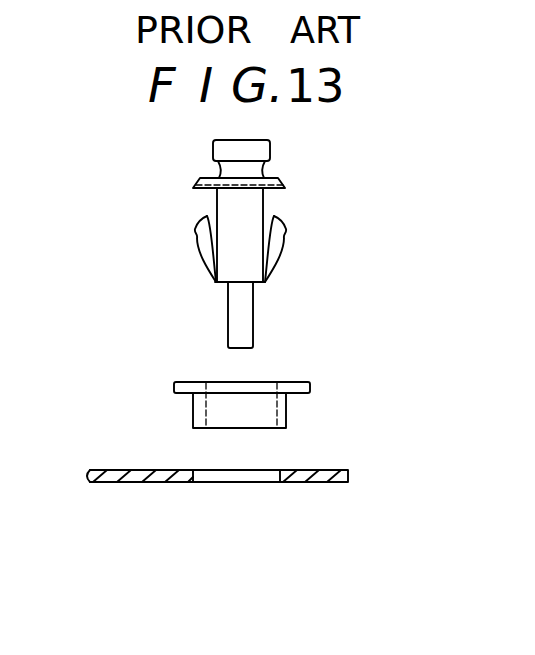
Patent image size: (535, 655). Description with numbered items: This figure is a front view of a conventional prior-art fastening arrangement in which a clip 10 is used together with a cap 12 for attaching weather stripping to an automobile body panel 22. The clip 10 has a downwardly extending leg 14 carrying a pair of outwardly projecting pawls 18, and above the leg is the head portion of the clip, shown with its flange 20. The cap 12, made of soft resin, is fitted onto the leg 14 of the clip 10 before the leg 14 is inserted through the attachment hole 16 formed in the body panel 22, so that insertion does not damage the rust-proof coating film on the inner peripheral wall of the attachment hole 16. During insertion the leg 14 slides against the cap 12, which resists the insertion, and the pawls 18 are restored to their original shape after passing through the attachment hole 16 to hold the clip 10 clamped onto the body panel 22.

The clip 10 is at (291, 204).
The cap 12 is at (295, 382).
The leg 14 is at (242, 262).
The attachment hole 16 is at (272, 482).
The pawls 18 is at (196, 234).
The head flange 20 is at (200, 180).
The body panel 22 is at (316, 470).